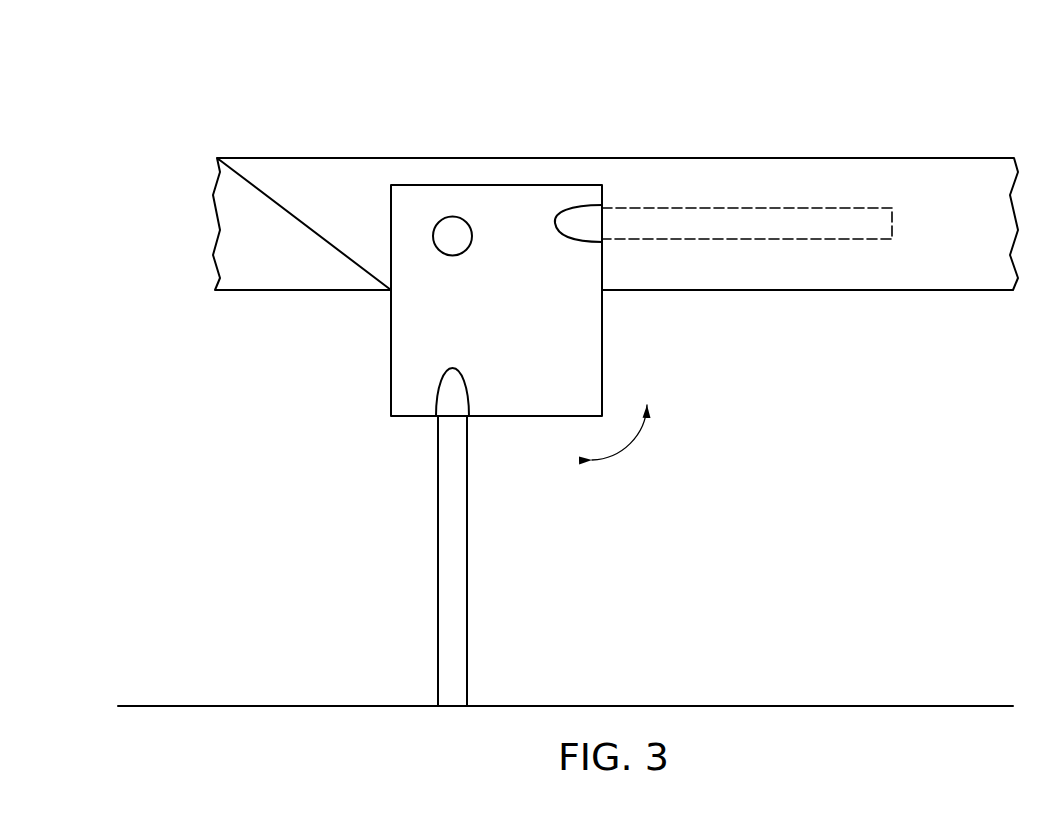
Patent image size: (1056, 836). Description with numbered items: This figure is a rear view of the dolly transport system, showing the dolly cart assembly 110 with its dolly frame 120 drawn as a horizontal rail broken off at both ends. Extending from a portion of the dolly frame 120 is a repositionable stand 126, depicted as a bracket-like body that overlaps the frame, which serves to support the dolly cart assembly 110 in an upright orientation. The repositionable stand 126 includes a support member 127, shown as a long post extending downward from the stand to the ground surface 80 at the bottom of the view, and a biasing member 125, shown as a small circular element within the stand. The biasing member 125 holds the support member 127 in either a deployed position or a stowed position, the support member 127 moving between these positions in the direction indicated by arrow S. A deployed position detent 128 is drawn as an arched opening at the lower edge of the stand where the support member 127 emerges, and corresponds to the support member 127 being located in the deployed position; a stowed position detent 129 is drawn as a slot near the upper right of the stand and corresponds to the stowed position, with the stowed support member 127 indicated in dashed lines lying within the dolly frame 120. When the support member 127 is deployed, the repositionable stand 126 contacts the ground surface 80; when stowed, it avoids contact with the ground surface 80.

The dolly cart assembly 110 is at (615, 364).
The dolly frame 120 is at (917, 134).
The biasing member 125 is at (452, 256).
The repositionable stand 126 is at (427, 305).
The support member 127 is at (437, 580).
The deployed position detent 128 is at (468, 388).
The stowed position detent 129 is at (583, 243).
The ground surface 80 is at (720, 705).
The arrow S s is at (640, 440).